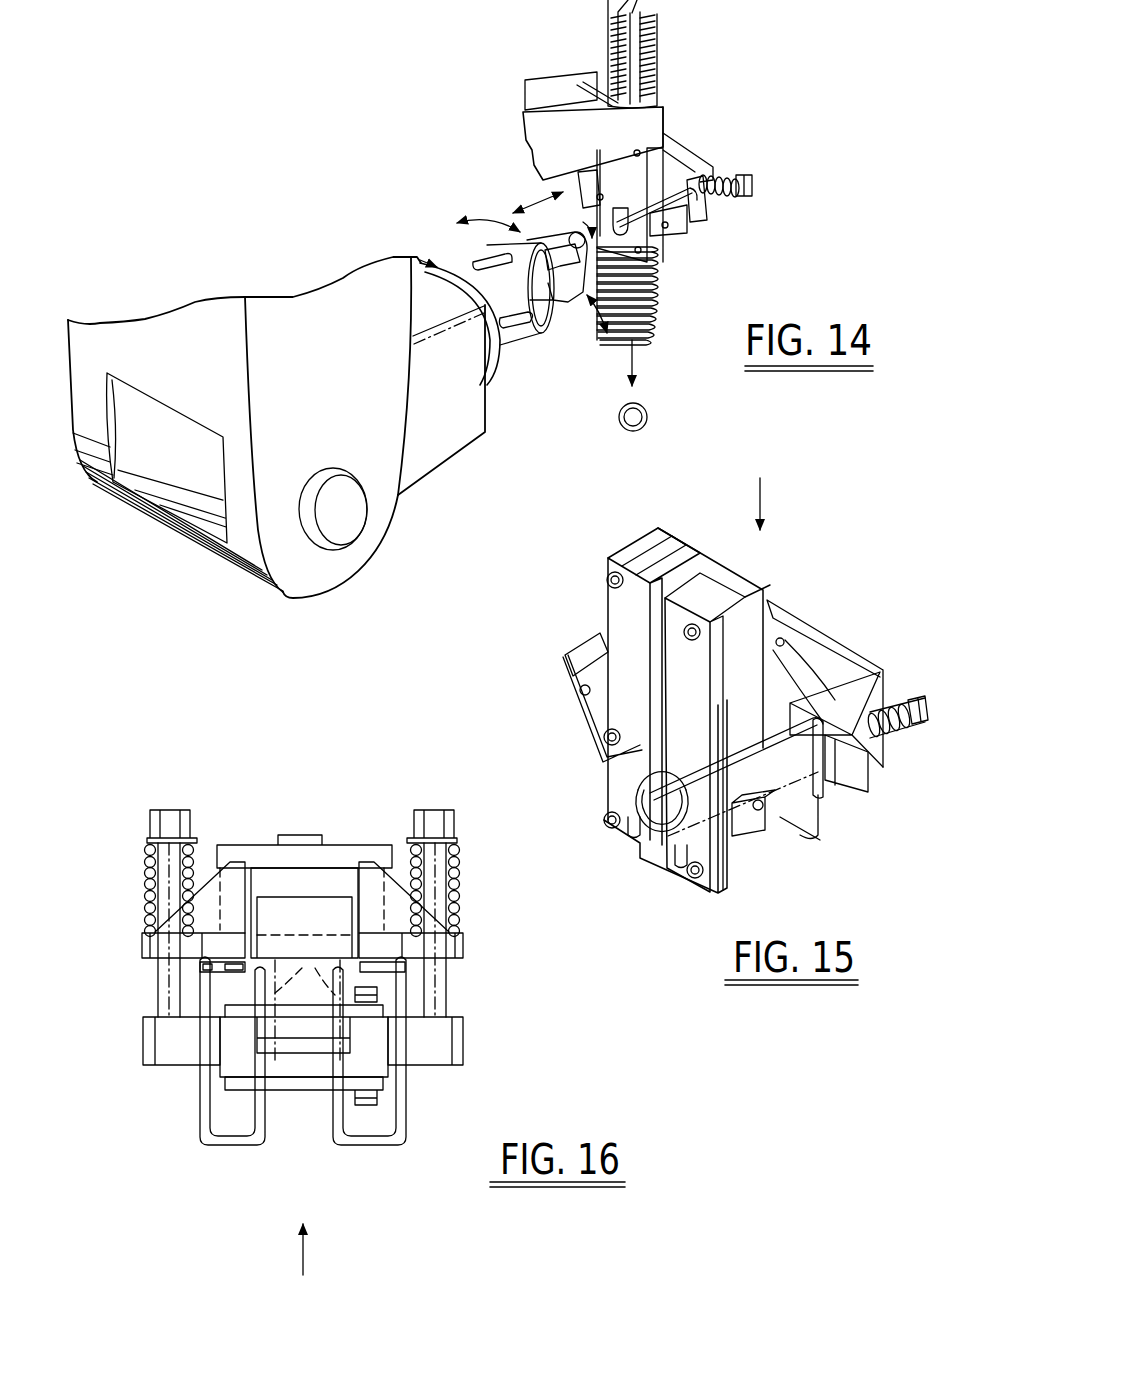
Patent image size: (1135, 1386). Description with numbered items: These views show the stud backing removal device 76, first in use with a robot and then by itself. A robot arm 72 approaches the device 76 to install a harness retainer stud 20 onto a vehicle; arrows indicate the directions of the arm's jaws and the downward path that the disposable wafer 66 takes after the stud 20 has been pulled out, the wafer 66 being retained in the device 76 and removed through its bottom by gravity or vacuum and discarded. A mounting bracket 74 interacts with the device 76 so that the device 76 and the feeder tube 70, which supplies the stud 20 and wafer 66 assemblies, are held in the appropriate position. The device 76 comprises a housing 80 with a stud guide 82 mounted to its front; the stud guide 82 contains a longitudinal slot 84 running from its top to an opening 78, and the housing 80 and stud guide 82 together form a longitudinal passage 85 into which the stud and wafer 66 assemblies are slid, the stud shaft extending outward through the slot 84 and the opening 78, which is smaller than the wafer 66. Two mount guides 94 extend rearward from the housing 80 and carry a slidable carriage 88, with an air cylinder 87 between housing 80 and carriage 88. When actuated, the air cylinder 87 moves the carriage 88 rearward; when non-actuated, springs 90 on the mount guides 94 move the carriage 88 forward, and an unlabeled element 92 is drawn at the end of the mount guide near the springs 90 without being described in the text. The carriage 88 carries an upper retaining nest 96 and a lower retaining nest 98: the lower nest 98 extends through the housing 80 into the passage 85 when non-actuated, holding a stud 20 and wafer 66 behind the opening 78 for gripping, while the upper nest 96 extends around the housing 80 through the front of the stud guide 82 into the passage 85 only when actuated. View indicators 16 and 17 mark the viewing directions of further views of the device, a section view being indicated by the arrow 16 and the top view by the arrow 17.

In FIG. 15, the view arrow for FIG. 16 is at (760, 495).
In FIG. 16, the view arrow for FIG. 17 is at (303, 1250).
In FIG. 14, the harness retainer stud 20 is at (513, 286).
In FIG. 14, the disposable wafer 66 is at (648, 412).
In FIG. 14, the feeder tube 70 is at (665, 38).
In FIG. 14, the robot arm 72 is at (346, 391).
In FIG. 14, the mounting bracket 74 is at (593, 126).
In FIG. 14, the stud backing removal device 76 is at (720, 158).
In FIG. 15, the stud backing removal device 76 is at (600, 562).
In FIG. 14, the opening 78 is at (656, 238).
In FIG. 15, the opening 78 is at (674, 840).
In FIG. 15, the housing 80 is at (626, 540).
In FIG. 16, the housing 80 is at (236, 1058).
In FIG. 15, the stud guide 82 is at (618, 597).
In FIG. 16, the stud guide 82 is at (243, 1092).
In FIG. 15, the longitudinal slot 84 is at (648, 640).
In FIG. 16, the longitudinal slot 84 is at (314, 1084).
In FIG. 15, the longitudinal passage 85 is at (667, 572).
In FIG. 16, the longitudinal passage 85 is at (300, 1065).
In FIG. 15, the air cylinder 87 is at (797, 660).
In FIG. 15, the carriage 88 is at (880, 668).
In FIG. 16, the carriage 88 is at (367, 848).
In FIG. 14, the springs 90 is at (725, 186).
In FIG. 15, the springs 90 is at (895, 740).
In FIG. 16, the springs 90 is at (152, 852).
In FIG. 15, the adjusting nut 92 is at (872, 780).
In FIG. 15, the mount guides 94 is at (828, 795).
In FIG. 16, the mount guides 94 is at (160, 996).
In FIG. 14, the upper retaining nest 96 is at (657, 207).
In FIG. 15, the upper retaining nest 96 is at (566, 692).
In FIG. 16, the upper retaining nest 96 is at (198, 1127).
In FIG. 15, the lower retaining nest 98 is at (800, 840).
In FIG. 16, the lower retaining nest 98 is at (305, 964).